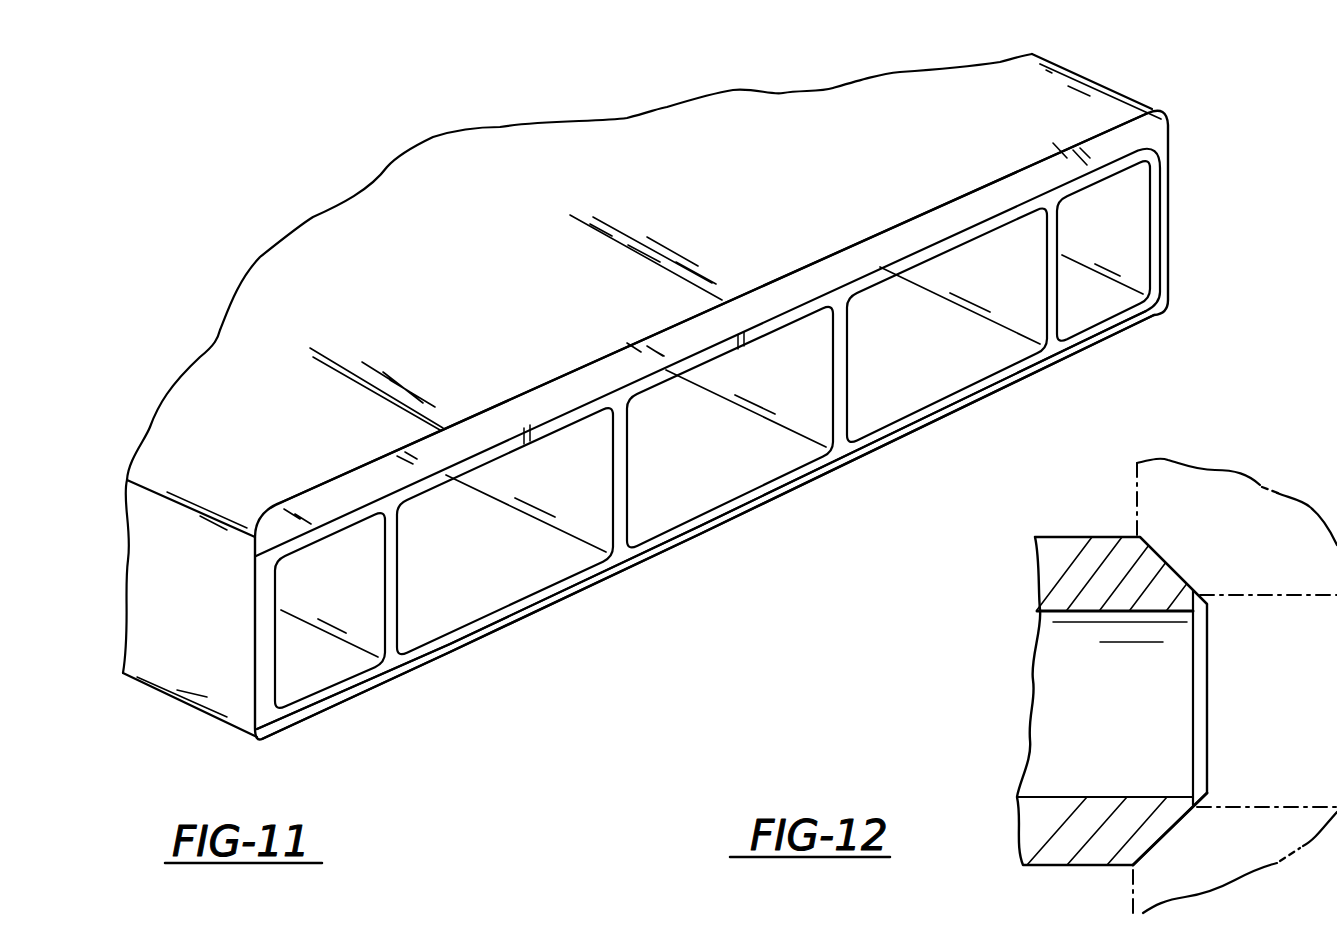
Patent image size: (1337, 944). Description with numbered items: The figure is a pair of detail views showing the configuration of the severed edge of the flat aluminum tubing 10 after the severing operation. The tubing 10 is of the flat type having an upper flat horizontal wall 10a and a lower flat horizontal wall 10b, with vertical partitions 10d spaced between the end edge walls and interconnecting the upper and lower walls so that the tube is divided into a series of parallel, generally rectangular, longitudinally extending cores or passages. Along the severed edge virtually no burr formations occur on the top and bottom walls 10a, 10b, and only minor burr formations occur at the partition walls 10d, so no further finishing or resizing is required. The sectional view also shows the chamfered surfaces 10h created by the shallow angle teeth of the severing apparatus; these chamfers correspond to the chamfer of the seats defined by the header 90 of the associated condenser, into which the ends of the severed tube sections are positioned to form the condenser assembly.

In FIG. 11, the flat aluminum tubing 10 is at (321, 256).
In FIG. 12, the flat aluminum tubing 10 is at (999, 839).
In FIG. 11, the upper flat horizontal wall 10a is at (796, 258).
In FIG. 11, the lower flat horizontal wall 10b is at (870, 458).
In FIG. 11, the vertical partition 10d is at (977, 268).
In FIG. 12, the vertical partition 10d is at (1094, 612).
In FIG. 11, the chamfered surface 10h is at (537, 398).
In FIG. 12, the chamfered surface 10h is at (1183, 574).
In FIG. 12, the header 90 is at (1306, 498).